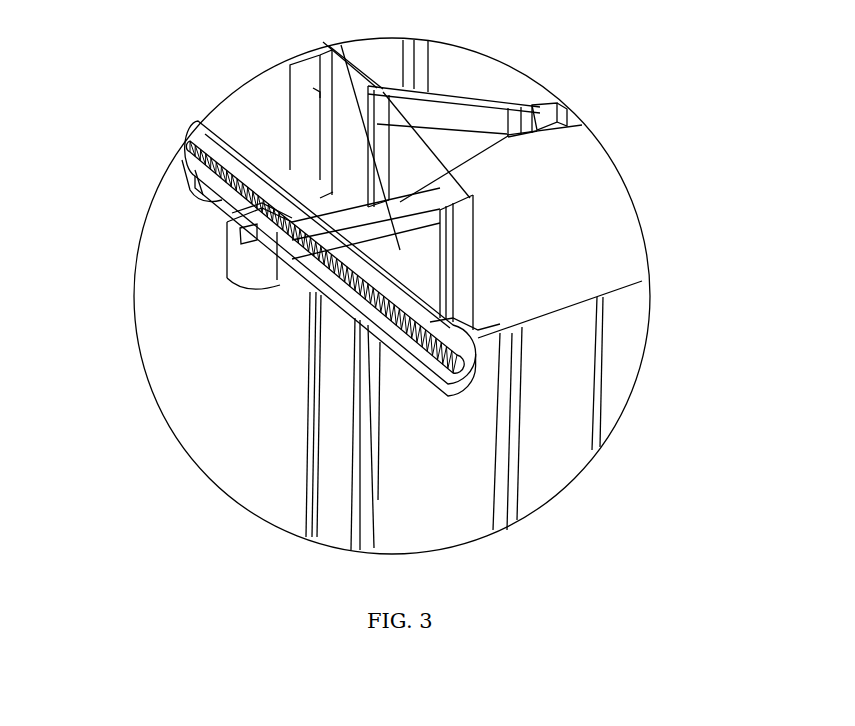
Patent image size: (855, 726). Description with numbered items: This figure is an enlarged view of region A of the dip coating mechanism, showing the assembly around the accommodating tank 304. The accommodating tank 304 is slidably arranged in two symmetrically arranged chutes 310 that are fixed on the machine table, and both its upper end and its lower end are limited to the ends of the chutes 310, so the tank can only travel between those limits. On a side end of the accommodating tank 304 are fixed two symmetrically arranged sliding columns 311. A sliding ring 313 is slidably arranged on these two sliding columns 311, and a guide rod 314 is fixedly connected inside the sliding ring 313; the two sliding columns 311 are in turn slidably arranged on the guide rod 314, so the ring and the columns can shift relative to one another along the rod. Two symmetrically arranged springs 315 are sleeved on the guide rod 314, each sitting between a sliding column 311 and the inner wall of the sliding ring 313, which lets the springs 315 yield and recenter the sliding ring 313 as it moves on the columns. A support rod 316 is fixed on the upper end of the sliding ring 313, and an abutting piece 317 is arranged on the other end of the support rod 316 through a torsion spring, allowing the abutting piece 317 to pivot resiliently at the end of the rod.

The enlarged region A is at (608, 157).
The accommodating tank 304 is at (552, 433).
The chute 310 is at (589, 259).
The sliding column 311 is at (290, 231).
The sliding ring 313 is at (392, 262).
The guide rod 314 is at (362, 287).
The spring 315 is at (423, 348).
The support rod 316 is at (474, 246).
The abutting piece 317 is at (228, 190).